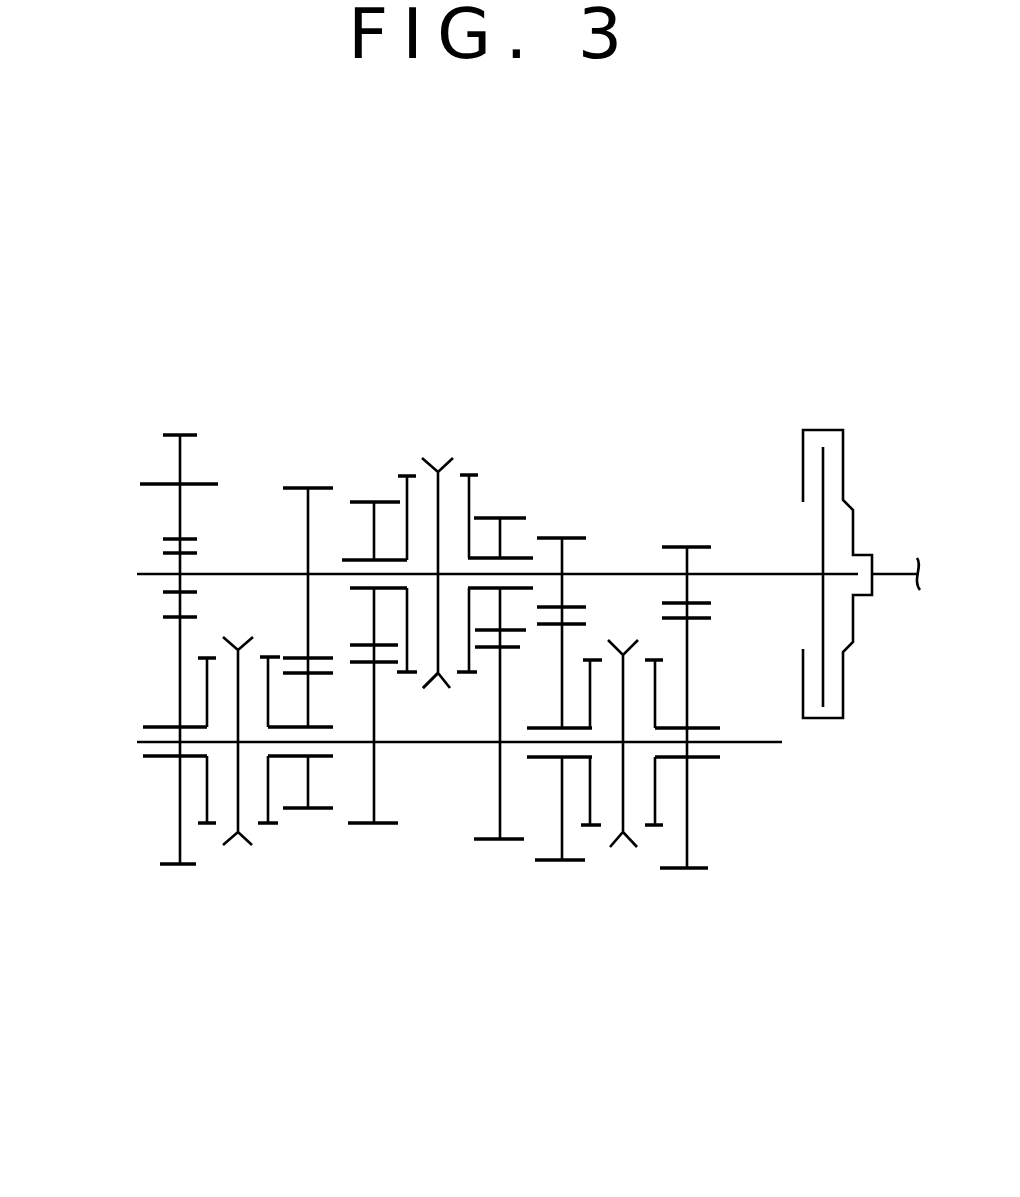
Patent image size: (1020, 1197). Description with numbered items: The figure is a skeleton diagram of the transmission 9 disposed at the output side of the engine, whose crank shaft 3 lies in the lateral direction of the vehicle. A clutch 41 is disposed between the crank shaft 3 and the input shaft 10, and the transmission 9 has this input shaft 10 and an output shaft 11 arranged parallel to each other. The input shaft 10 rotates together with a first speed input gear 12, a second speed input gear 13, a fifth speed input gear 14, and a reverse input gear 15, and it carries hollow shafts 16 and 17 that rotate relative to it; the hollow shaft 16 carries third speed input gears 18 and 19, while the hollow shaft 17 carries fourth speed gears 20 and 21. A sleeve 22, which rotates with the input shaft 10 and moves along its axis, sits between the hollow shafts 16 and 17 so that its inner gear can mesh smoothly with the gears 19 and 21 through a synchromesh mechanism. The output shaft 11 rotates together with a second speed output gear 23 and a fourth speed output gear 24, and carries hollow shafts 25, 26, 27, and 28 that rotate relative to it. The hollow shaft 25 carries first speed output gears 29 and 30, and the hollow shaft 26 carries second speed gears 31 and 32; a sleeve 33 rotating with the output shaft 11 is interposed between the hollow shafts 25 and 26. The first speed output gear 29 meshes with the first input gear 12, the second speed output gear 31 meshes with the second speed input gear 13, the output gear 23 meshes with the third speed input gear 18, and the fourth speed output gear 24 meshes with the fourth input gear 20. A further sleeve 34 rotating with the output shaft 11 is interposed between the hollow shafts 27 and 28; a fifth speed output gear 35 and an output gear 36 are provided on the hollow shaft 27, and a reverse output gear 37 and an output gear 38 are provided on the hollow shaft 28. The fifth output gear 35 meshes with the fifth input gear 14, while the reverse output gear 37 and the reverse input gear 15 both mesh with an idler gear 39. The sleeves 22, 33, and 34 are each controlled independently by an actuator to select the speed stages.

The crank shaft 3 is at (907, 568).
The transmission 9 is at (413, 1035).
The input shaft 10 is at (762, 573).
The output shaft 11 is at (763, 745).
The first speed input gear 12 is at (700, 547).
The second speed input gear 13 is at (565, 538).
The fifth speed input gear 14 is at (297, 487).
The reverse input gear 15 is at (172, 553).
The hollow shaft 16 is at (468, 588).
The hollow shaft 17 is at (352, 588).
The third speed input gear 18 is at (488, 517).
The third speed input gear 19 is at (469, 500).
The fourth speed gear 20 is at (357, 508).
The fourth speed gear 21 is at (408, 473).
The sleeve 22 is at (425, 690).
The second speed output gear 23 is at (483, 840).
The fourth speed output gear 24 is at (375, 825).
The hollow shaft 25 is at (703, 728).
The hollow shaft 26 is at (550, 727).
The hollow shaft 27 is at (337, 713).
The hollow shaft 28 is at (163, 757).
The first speed output gear 29 is at (677, 870).
The first speed output gear 30 is at (648, 827).
The second speed output gear 31 is at (547, 860).
The second speed gear 32 is at (587, 660).
The sleeve 33 is at (612, 847).
The sleeve 34 is at (233, 845).
The fifth speed output gear 35 is at (302, 812).
The output gear 36 is at (272, 655).
The reverse output gear 37 is at (177, 870).
The output gear 38 is at (205, 827).
The idler gear 39 is at (173, 430).
The clutch 41 is at (802, 707).